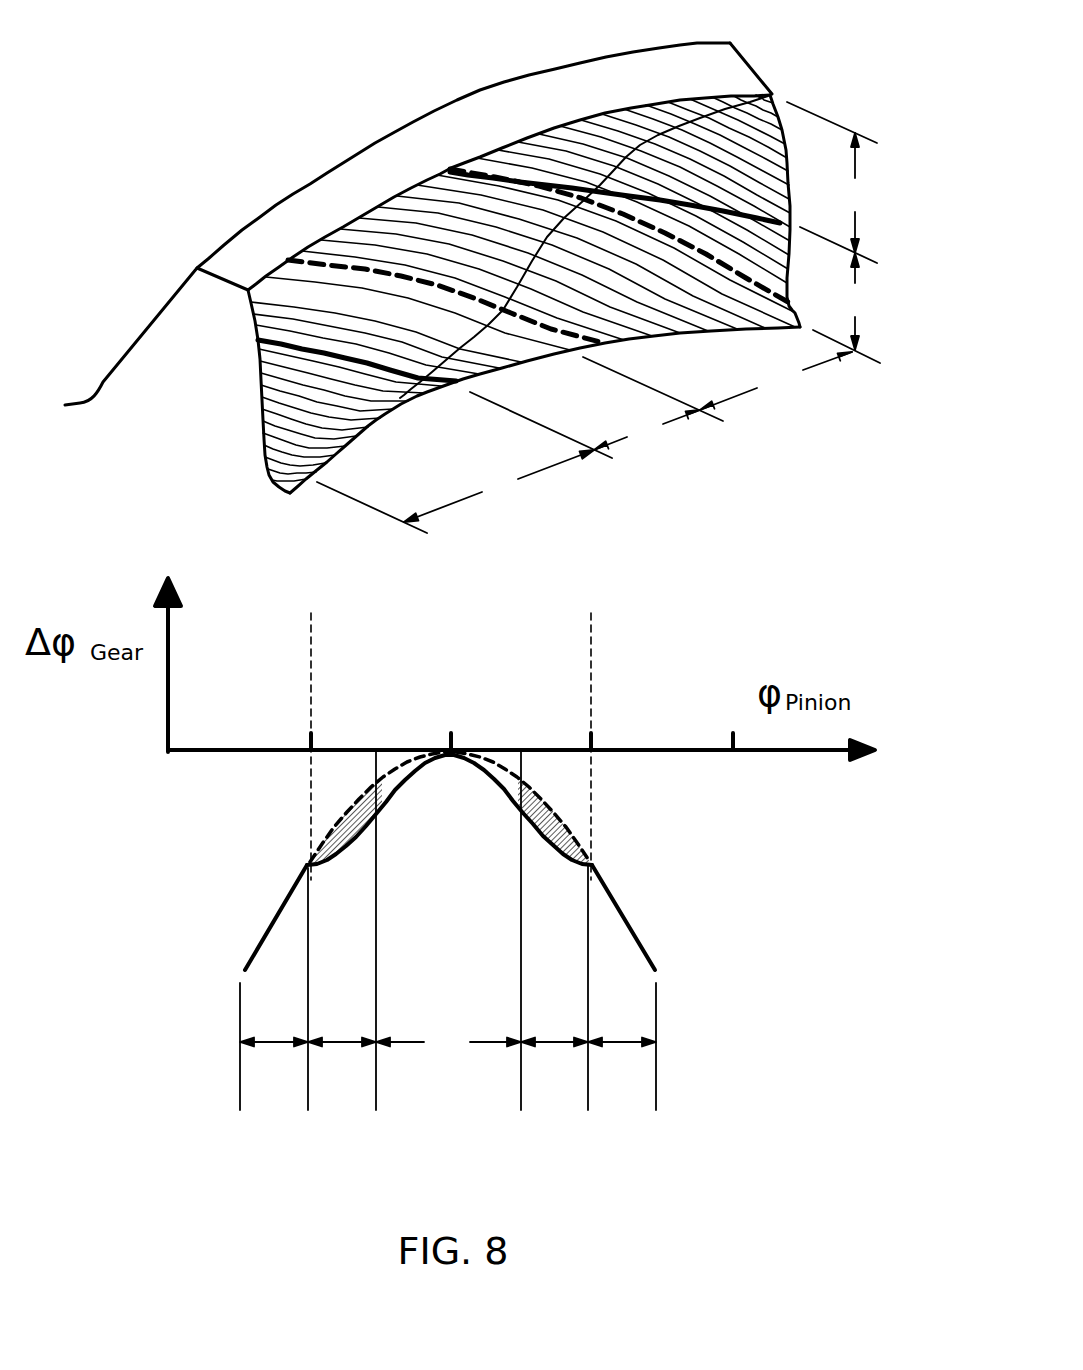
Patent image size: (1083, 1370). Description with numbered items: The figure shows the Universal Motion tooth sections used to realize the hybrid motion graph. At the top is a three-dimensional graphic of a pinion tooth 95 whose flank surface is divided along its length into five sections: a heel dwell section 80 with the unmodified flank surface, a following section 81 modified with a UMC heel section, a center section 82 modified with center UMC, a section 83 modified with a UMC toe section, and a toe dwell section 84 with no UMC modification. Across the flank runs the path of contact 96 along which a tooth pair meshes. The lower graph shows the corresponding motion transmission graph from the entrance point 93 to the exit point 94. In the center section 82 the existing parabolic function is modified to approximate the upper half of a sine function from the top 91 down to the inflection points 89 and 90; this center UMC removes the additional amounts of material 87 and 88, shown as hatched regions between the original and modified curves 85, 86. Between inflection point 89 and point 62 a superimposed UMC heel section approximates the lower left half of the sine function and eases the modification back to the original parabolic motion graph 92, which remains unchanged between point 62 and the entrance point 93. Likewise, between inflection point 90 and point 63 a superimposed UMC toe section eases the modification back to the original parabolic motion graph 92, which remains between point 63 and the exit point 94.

The point 62 is at (230, 837).
The point 63 is at (597, 858).
The heel dwell section 80 is at (558, 606).
The section 81 is at (592, 668).
The center section 82 is at (614, 731).
The section 83 is at (585, 751).
The toe dwell section 84 is at (486, 780).
The modified transmission error curve (left) 85 is at (388, 783).
The modified transmission error curve (right) 86 is at (518, 784).
The additional amount of material 87 is at (342, 836).
The additional amount of material 88 is at (560, 818).
The inflection point 89 is at (386, 823).
The inflection point 90 is at (518, 814).
The top 91 is at (452, 754).
The original parabolic motion graph 92 is at (268, 930).
The entrance point 93 is at (772, 94).
The exit point 94 is at (313, 483).
The pinion tooth 95 is at (350, 188).
The path of contact 96 is at (512, 246).